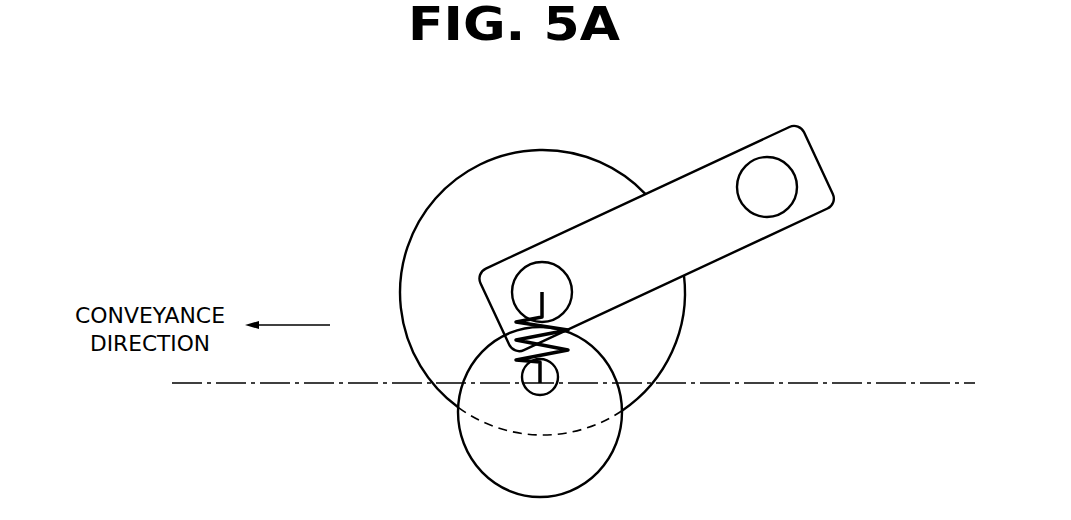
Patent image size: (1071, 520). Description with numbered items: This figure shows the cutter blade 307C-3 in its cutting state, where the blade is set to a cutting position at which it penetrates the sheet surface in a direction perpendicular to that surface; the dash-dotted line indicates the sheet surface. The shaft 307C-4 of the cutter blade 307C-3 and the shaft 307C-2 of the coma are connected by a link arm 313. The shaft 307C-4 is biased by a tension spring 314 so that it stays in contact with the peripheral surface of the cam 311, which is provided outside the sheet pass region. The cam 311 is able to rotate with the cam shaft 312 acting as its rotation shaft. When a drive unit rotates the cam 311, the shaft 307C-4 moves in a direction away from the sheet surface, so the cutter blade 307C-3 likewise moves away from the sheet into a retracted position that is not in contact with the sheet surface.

The cutter blade 307C-3 is at (483, 182).
The shaft 307C-4 is at (552, 261).
The shaft 307C-2 is at (800, 176).
The link arm 313 is at (743, 157).
The tension spring 314 is at (512, 343).
The cam shaft 312 is at (560, 377).
The cam 311 is at (605, 436).